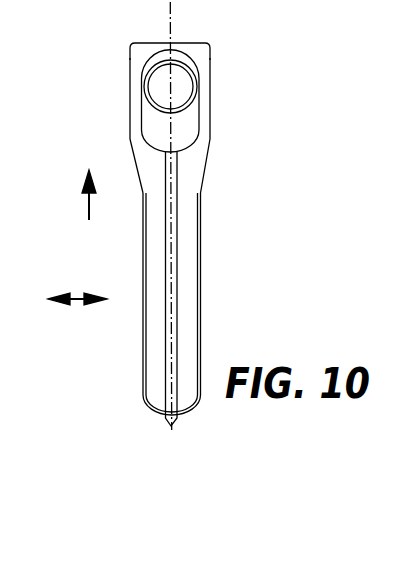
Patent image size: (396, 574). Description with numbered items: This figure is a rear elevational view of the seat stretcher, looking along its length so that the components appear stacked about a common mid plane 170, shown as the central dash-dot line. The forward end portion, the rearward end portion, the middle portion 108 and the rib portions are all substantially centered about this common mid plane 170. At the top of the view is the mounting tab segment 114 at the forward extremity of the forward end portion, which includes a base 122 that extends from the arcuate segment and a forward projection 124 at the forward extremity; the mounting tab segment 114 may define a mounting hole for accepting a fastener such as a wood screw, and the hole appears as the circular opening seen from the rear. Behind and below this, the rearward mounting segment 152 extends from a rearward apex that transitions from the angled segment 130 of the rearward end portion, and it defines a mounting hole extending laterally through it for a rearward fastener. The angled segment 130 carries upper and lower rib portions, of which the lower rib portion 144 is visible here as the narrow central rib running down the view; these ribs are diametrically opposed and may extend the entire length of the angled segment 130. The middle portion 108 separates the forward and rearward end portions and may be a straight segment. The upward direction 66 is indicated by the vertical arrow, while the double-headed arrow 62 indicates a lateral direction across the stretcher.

The common mid plane 170 is at (167, 14).
The forward projection 124 is at (205, 43).
The rearward mounting segment 152 is at (186, 65).
The mounting tab segment 114 is at (211, 118).
The base 122 is at (206, 160).
The angled segment 130 is at (183, 217).
The lower rib portion 144 is at (178, 302).
The middle portion 108 is at (147, 410).
The upward direction 66 is at (86, 201).
The lateral direction arrow 62 is at (78, 300).